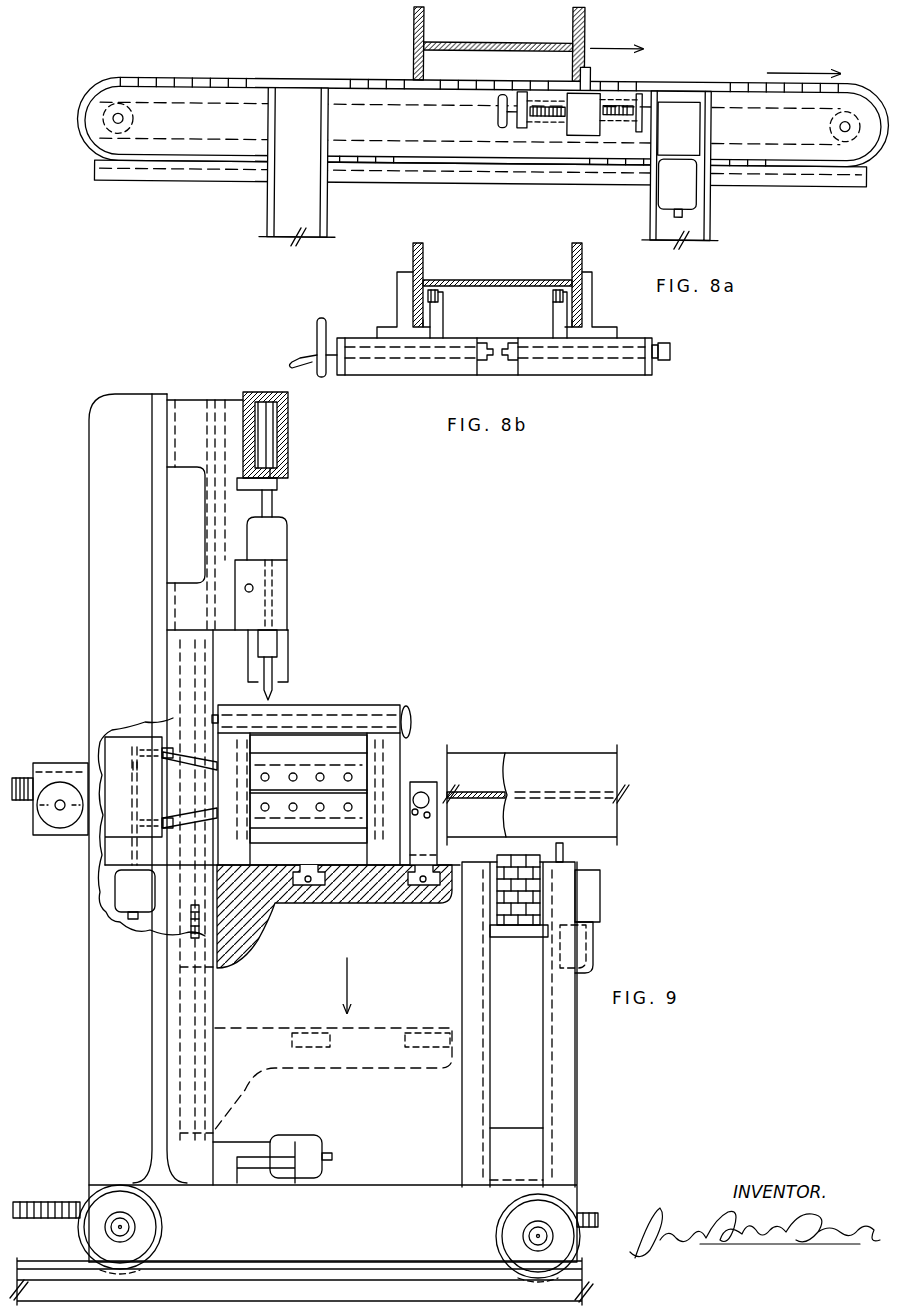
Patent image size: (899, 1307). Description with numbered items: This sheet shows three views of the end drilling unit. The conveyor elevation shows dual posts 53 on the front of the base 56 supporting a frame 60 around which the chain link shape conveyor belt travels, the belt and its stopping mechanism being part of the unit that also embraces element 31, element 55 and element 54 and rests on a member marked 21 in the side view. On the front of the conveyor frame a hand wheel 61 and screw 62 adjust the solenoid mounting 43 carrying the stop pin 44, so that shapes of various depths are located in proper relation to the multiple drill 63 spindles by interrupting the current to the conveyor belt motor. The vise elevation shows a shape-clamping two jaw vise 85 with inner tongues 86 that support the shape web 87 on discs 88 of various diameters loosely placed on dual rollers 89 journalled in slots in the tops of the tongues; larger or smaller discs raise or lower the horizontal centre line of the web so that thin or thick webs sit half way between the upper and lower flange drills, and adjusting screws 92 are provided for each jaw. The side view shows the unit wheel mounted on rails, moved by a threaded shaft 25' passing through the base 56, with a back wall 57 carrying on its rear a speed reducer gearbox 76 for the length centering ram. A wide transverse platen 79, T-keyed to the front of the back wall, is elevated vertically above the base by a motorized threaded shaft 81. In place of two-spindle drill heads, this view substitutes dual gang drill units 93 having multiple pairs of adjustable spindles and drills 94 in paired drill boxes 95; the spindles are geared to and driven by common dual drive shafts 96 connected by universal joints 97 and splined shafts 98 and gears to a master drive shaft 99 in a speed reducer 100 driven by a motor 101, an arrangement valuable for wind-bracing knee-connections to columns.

In FIG. 8A, the conveyor 31 is at (146, 77).
In FIG. 9, the conveyor 31 is at (497, 856).
In FIG. 8A, the frame 60 is at (190, 128).
In FIG. 8A, the dual posts 53 is at (308, 204).
In FIG. 8A, the stop pin 44 is at (590, 56).
In FIG. 8A, the hand wheel 61 is at (496, 106).
In FIG. 8A, the screw 62 is at (572, 92).
In FIG. 8A, the solenoid mounting 43 is at (598, 131).
In FIG. 8A, the control box 55 is at (692, 134).
In FIG. 8A, the cylinder 54 is at (691, 186).
In FIG. 8B, the two jaw vise 85 is at (398, 288).
In FIG. 9, the two jaw vise 85 is at (416, 784).
In FIG. 8B, the shape web 87 is at (522, 280).
In FIG. 8B, the discs 88 is at (446, 292).
In FIG. 8B, the dual rollers 89 is at (553, 298).
In FIG. 8B, the inner tongues 86 is at (446, 320).
In FIG. 8B, the adjusting screws 92 is at (330, 338).
In FIG. 9, the back wall 57 is at (167, 674).
In FIG. 9, the drill 63 is at (280, 672).
In FIG. 9, the dual gang drill units 93 is at (352, 698).
In FIG. 9, the adjustable spindles and drills 94 is at (348, 820).
In FIG. 9, the paired drill boxes 95 is at (326, 836).
In FIG. 9, the common dual drive shafts 96 is at (330, 766).
In FIG. 9, the speed reducer 100 is at (150, 792).
In FIG. 9, the master drive shaft 99 is at (132, 774).
In FIG. 9, the universal joints 97 is at (166, 752).
In FIG. 9, the splined shafts 98 is at (207, 818).
In FIG. 9, the speed reducer gearbox 76 is at (76, 760).
In FIG. 9, the motor 101 is at (146, 886).
In FIG. 9, the motorized threaded shaft 81 is at (190, 922).
In FIG. 9, the transverse platen 79 is at (388, 902).
In FIG. 9, the beam 21 is at (566, 756).
In FIG. 9, the base 56 is at (343, 1233).
In FIG. 9, the shaft 25' is at (46, 1199).